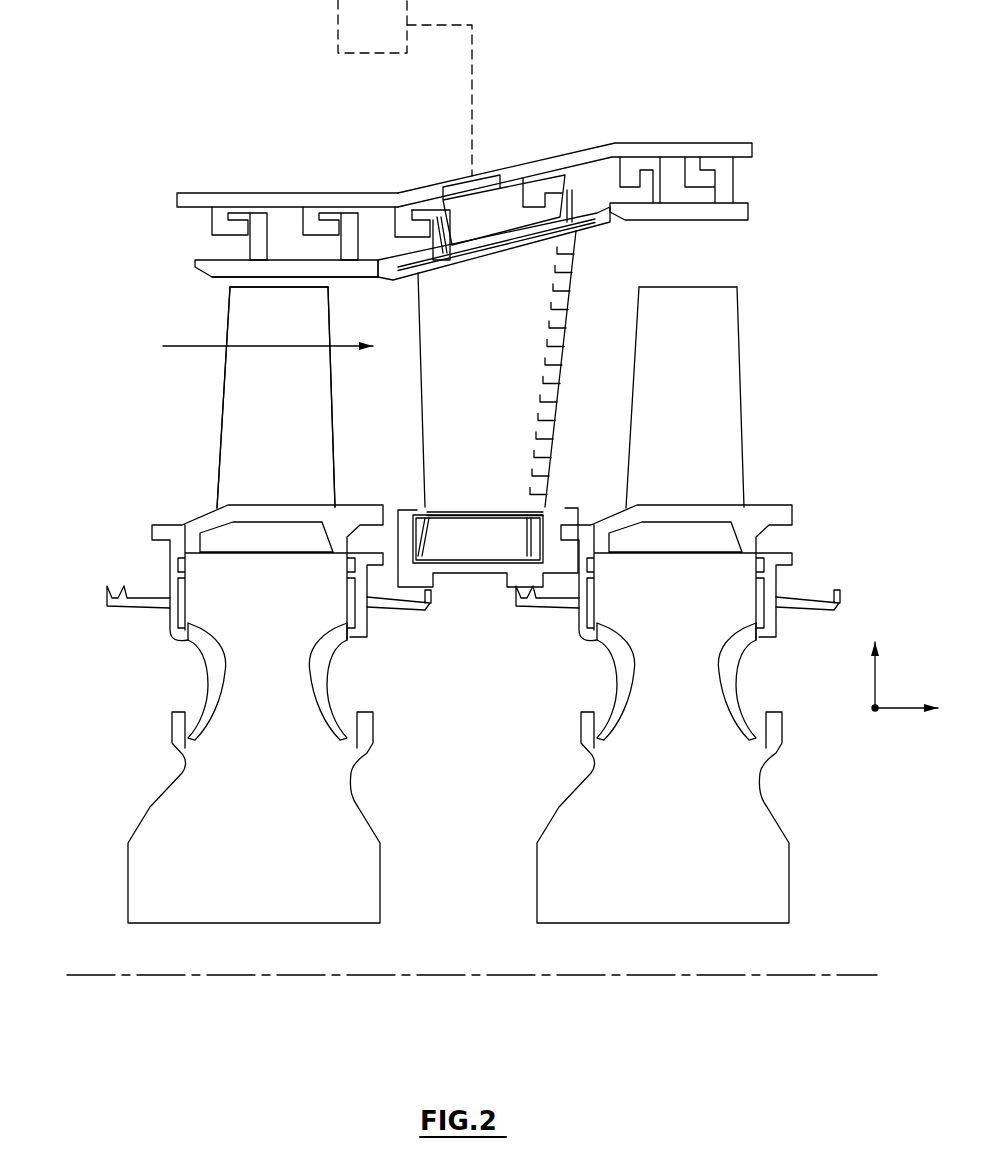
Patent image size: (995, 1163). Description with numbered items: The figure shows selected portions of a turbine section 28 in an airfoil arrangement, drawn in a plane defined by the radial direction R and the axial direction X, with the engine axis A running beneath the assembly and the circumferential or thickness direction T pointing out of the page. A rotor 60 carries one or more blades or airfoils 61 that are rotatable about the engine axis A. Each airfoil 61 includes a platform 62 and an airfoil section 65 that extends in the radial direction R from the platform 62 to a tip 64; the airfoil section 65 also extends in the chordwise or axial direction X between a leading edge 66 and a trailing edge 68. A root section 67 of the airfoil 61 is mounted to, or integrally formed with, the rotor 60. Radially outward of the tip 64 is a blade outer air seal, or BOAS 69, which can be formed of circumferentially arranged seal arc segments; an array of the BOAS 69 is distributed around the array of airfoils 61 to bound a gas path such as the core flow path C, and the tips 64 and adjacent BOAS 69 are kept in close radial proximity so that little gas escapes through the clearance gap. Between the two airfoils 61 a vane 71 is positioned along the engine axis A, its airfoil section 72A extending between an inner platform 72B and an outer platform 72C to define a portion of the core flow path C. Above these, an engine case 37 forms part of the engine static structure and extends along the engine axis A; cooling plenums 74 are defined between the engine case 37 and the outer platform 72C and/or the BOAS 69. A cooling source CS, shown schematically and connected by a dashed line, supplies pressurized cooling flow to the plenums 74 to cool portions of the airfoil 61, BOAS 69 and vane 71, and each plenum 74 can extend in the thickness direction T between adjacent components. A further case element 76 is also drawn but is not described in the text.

The turbine section 28 is at (100, 137).
The engine case 37 is at (237, 193).
The rotor 60 is at (150, 810).
The airfoil 61 is at (336, 396).
The platform 62 is at (170, 523).
The tip 64 is at (252, 282).
The airfoil section 65 is at (255, 405).
The leading edge 66 is at (222, 445).
The root section 67 is at (207, 602).
The trailing edge 68 is at (337, 452).
The blade outer air seal 69 is at (195, 265).
The vane 71 is at (568, 362).
The airfoil section 72A is at (513, 448).
The inner platform 72B is at (563, 507).
The outer platform 72C is at (585, 224).
The plenum 74 is at (289, 231).
The outer case 76 is at (593, 123).
The cooling source CS is at (389, 46).
The core flow path C is at (175, 347).
The engine axis A is at (825, 975).
The radial direction R is at (888, 662).
The axial direction X is at (919, 711).
The thickness direction T is at (875, 710).